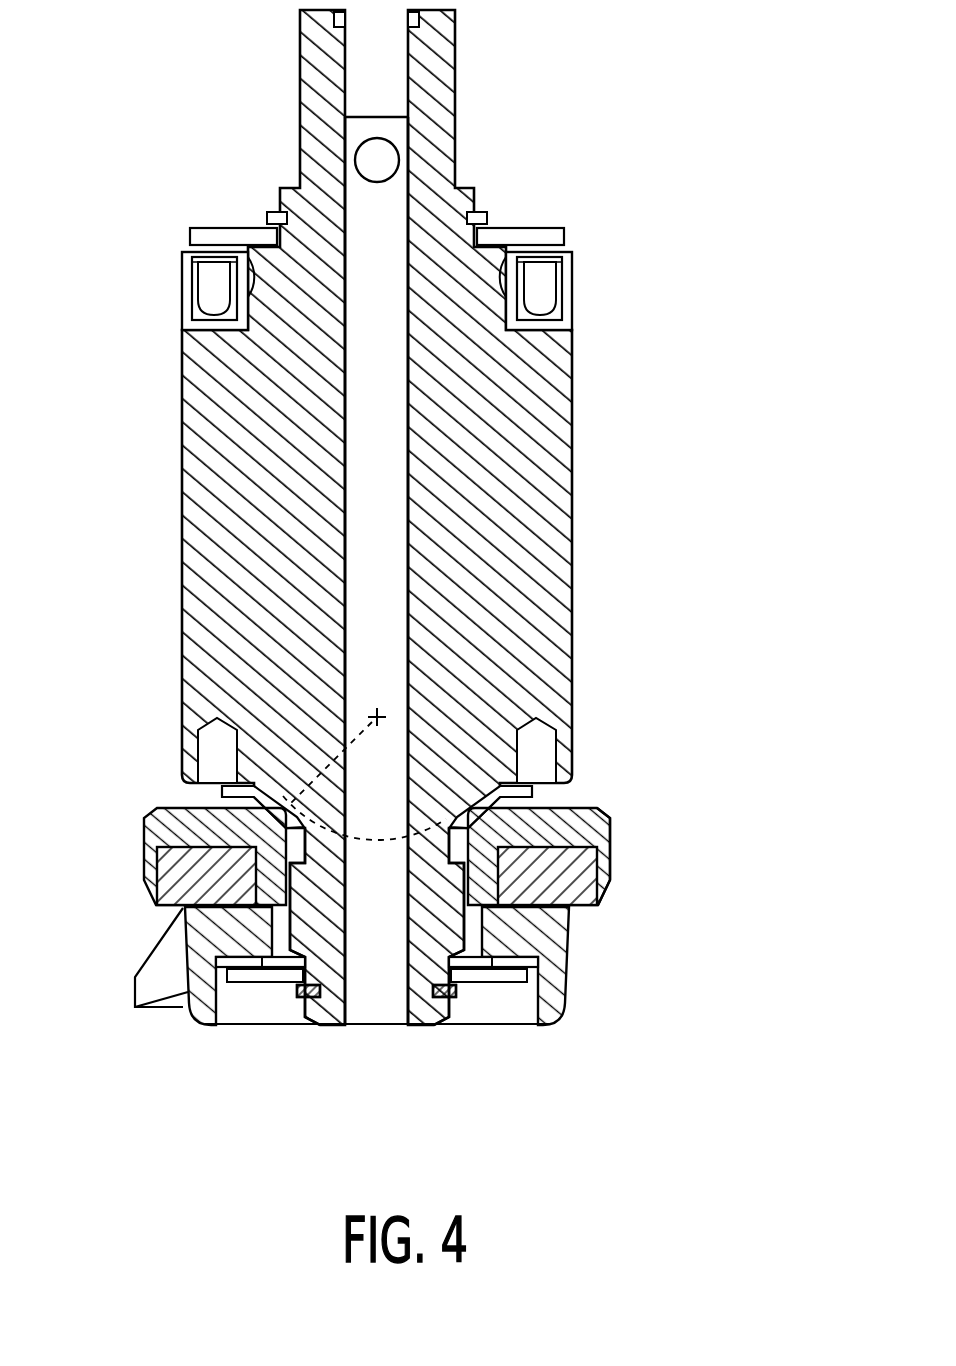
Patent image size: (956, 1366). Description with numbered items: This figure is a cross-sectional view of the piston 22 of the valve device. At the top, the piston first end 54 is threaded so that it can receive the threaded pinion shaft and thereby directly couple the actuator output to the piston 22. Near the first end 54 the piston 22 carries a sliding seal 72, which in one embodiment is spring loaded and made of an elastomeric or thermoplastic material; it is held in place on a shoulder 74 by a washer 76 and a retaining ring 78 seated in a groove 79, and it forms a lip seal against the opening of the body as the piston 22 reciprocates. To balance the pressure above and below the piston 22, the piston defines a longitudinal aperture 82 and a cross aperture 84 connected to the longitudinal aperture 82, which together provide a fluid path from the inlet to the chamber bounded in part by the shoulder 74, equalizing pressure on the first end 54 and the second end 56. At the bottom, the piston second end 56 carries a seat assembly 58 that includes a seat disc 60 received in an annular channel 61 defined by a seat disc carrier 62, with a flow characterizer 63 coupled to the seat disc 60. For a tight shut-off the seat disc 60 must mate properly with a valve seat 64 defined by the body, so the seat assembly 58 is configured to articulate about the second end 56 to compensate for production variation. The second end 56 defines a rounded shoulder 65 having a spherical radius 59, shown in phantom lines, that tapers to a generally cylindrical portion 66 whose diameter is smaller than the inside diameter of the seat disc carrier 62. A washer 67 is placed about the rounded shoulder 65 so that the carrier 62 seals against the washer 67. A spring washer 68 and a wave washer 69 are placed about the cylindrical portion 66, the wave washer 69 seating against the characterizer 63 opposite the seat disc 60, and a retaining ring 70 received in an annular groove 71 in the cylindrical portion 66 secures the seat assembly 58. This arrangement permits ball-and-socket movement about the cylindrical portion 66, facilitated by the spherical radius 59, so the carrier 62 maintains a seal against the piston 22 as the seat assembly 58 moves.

The piston 22 is at (441, 517).
The first end 54 is at (467, 26).
The second end 56 is at (193, 915).
The seat assembly 58 is at (148, 877).
The spherical radius 59 is at (364, 774).
The seat disc 60 is at (605, 898).
The annular channel 61 is at (663, 858).
The seat disc carrier 62 is at (449, 856).
The flow characterizer 63 is at (436, 980).
The valve seat 64 is at (134, 957).
The rounded shoulder 65 is at (197, 786).
The cylindrical portion 66 is at (566, 926).
The washer 67 is at (595, 797).
The spring washer 68 is at (311, 1005).
The washer 69 is at (316, 1041).
The retaining ring 70 is at (451, 1040).
The annular groove 71 is at (429, 1062).
The sliding seal 72 is at (458, 288).
The shoulder 74 is at (453, 311).
The washer 76 is at (447, 219).
The retaining ring 78 is at (548, 166).
The groove 79 is at (431, 143).
The longitudinal aperture 82 is at (529, 571).
The cross aperture 84 is at (290, 133).